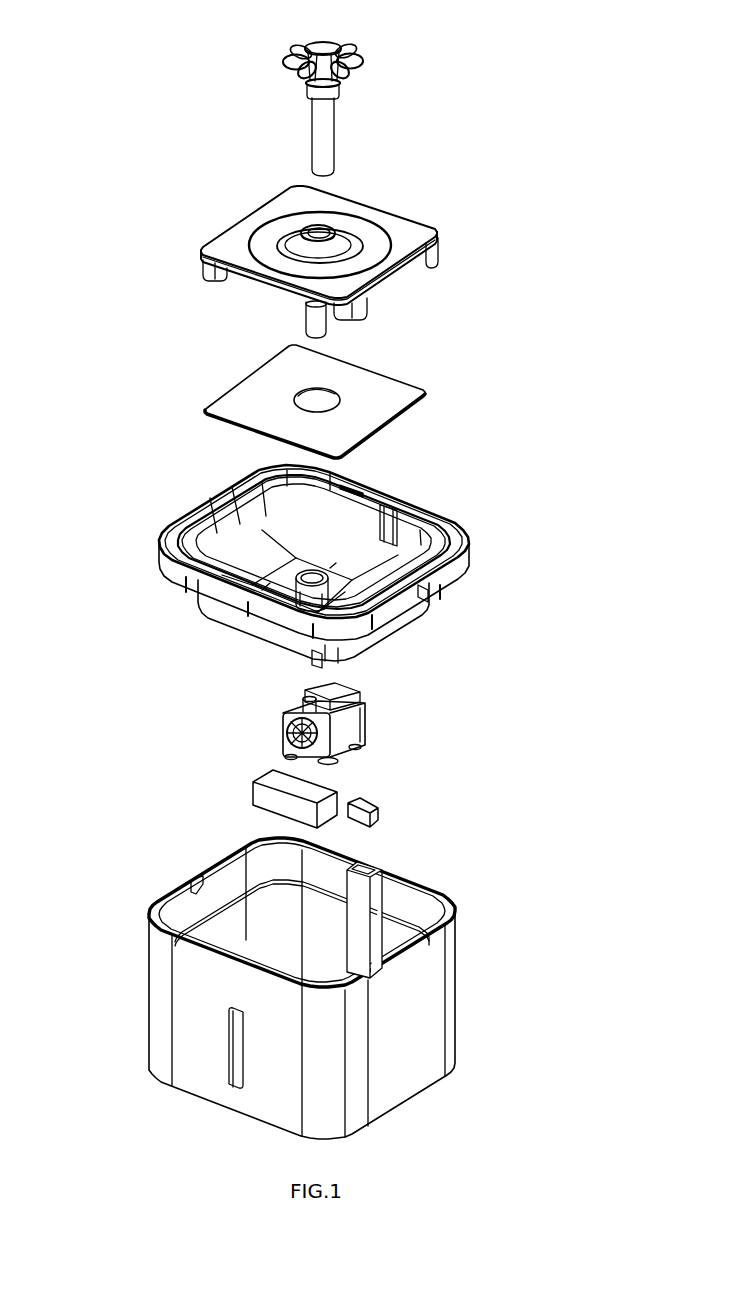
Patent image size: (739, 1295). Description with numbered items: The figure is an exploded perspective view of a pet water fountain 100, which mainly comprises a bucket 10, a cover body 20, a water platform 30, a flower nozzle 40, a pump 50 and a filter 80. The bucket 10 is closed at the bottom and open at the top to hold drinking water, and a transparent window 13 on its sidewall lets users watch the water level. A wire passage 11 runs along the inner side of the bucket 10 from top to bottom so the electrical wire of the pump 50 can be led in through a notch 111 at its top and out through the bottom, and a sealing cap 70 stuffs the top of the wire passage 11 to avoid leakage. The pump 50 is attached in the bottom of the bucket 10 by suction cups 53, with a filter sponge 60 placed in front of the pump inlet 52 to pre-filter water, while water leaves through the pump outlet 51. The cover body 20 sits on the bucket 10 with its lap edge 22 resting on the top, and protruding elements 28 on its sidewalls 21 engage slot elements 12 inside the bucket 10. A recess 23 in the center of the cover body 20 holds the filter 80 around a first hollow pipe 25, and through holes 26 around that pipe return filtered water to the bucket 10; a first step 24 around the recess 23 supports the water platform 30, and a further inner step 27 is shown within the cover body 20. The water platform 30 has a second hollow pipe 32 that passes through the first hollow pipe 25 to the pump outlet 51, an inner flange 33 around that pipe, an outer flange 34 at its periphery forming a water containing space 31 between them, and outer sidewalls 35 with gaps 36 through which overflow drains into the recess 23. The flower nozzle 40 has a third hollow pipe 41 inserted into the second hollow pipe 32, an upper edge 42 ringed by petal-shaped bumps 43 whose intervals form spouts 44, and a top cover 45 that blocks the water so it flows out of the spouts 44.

The pet water fountain 100 is at (541, 27).
The bucket 10 is at (455, 966).
The wire passage 11 is at (372, 866).
The notch 111 is at (393, 867).
The slot element 12 is at (200, 888).
The transparent window 13 is at (233, 1037).
The cover body 20 is at (455, 578).
The sidewall 21 is at (197, 590).
The lap edge 22 is at (170, 535).
The recess 23 is at (247, 552).
The first step 24 is at (260, 568).
The first hollow pipe 25 is at (290, 608).
The through holes 26 is at (242, 595).
The inner step 27 is at (218, 537).
The protruding element 28 is at (423, 592).
The water platform 30 is at (450, 245).
The water containing space 31 is at (367, 240).
The second hollow pipe 32 is at (310, 313).
The inner flange 33 is at (303, 231).
The outer flange 34 is at (395, 228).
The outer sidewall 35 is at (210, 270).
The gap 36 is at (230, 282).
The flower nozzle 40 is at (372, 90).
The third hollow pipe 41 is at (318, 130).
The upper edge 42 is at (297, 83).
The petal-shaped bumps 43 is at (297, 62).
The spouts 44 is at (292, 75).
The top cover 45 is at (325, 47).
The pump 50 is at (367, 720).
The pump outlet 51 is at (343, 695).
The pump inlet 52 is at (288, 737).
The suction cups 53 is at (340, 760).
The filter sponge 60 is at (273, 780).
The sealing cap 70 is at (370, 803).
The filter 80 is at (428, 391).